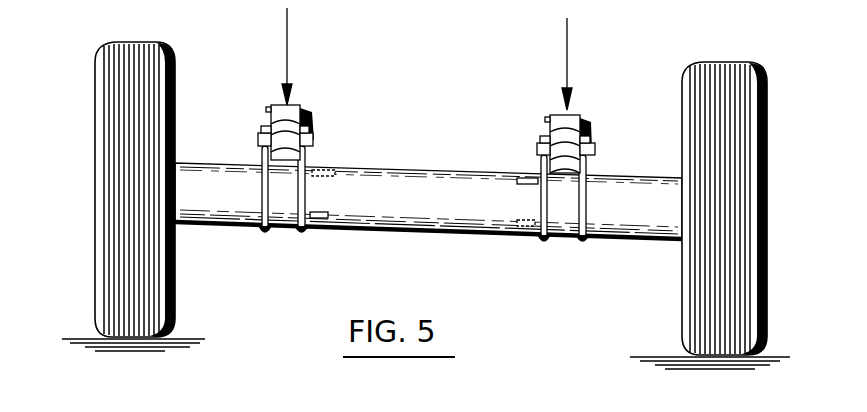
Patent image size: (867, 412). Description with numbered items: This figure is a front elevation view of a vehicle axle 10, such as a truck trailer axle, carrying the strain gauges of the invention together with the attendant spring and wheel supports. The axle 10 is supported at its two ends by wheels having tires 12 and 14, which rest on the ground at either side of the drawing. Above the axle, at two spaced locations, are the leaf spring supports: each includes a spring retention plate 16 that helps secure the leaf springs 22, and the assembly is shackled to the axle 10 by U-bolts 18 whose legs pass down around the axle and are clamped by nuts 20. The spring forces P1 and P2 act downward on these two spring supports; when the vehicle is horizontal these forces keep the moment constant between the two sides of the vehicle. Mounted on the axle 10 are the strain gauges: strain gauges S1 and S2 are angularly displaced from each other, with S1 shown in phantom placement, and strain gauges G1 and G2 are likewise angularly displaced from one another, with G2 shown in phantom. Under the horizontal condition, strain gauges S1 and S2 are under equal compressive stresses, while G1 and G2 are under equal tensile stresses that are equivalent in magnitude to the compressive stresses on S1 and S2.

The axle 10 is at (251, 232).
The tire 12 is at (765, 131).
The tire 14 is at (95, 164).
The spring retention plate 16 is at (313, 146).
The U-bolt 18 is at (301, 235).
The nut 20 is at (263, 133).
The leaf spring 22 is at (301, 156).
The spring force P1 is at (288, 38).
The spring force P2 is at (568, 46).
The strain gauge S1 is at (336, 173).
The strain gauge S2 is at (533, 181).
The strain gauge G1 is at (322, 220).
The strain gauge G2 is at (533, 228).